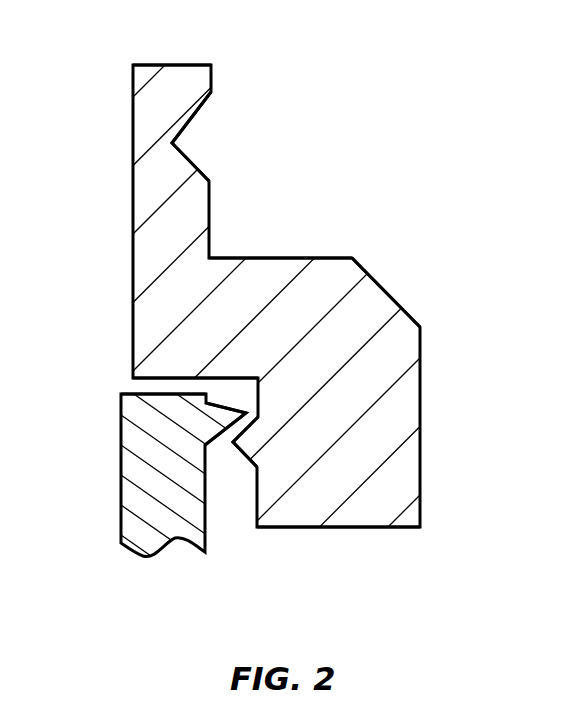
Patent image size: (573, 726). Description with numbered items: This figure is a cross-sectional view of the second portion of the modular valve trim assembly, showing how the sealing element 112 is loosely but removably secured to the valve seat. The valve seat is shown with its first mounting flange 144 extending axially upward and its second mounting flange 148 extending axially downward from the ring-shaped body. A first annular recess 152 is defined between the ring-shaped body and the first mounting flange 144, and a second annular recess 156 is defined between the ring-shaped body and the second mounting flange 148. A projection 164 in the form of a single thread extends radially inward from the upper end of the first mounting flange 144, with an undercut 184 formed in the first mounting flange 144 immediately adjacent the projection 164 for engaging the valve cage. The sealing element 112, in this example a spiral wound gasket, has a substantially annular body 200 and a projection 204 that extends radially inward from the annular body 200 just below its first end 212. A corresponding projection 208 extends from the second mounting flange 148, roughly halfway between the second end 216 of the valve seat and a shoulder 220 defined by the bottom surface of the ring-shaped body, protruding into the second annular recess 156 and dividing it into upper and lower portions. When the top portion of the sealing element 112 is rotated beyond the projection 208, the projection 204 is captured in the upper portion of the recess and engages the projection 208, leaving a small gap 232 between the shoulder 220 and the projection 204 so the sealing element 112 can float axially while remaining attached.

The sealing element 112 is at (107, 495).
The first mounting flange 144 is at (177, 88).
The second mounting flange 148 is at (390, 480).
The first annular recess 152 is at (261, 207).
The second annular recess 156 is at (254, 336).
The projection 164 is at (212, 69).
The undercut 184 is at (173, 145).
The annular body 200 is at (147, 507).
The projection 204 is at (220, 420).
The projection 208 is at (235, 441).
The first end 212 is at (120, 392).
The second end 216 is at (367, 530).
The shoulder 220 is at (247, 308).
The gap 232 is at (130, 383).